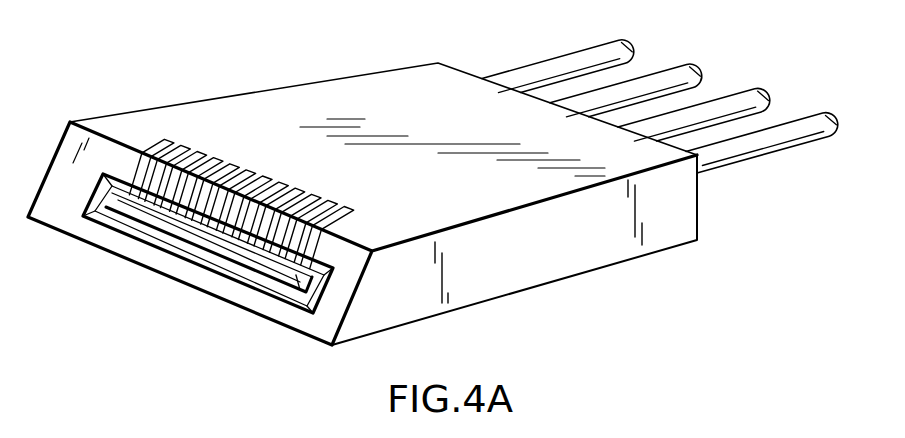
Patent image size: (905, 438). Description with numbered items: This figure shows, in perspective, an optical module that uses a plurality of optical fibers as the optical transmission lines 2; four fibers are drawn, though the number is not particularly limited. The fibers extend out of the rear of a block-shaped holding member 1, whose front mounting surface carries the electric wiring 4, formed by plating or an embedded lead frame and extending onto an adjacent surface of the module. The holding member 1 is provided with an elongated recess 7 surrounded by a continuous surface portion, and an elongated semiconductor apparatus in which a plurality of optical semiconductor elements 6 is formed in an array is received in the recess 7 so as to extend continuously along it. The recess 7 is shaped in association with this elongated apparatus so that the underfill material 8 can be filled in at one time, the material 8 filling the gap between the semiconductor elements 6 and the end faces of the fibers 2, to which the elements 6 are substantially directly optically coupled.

The holding member 1 is at (481, 295).
The optical transmission line 2 is at (853, 121).
The electric wiring 4 is at (339, 205).
The optical semiconductor device 6 is at (180, 232).
The recess 7 is at (315, 260).
The underfill material 8 is at (300, 292).